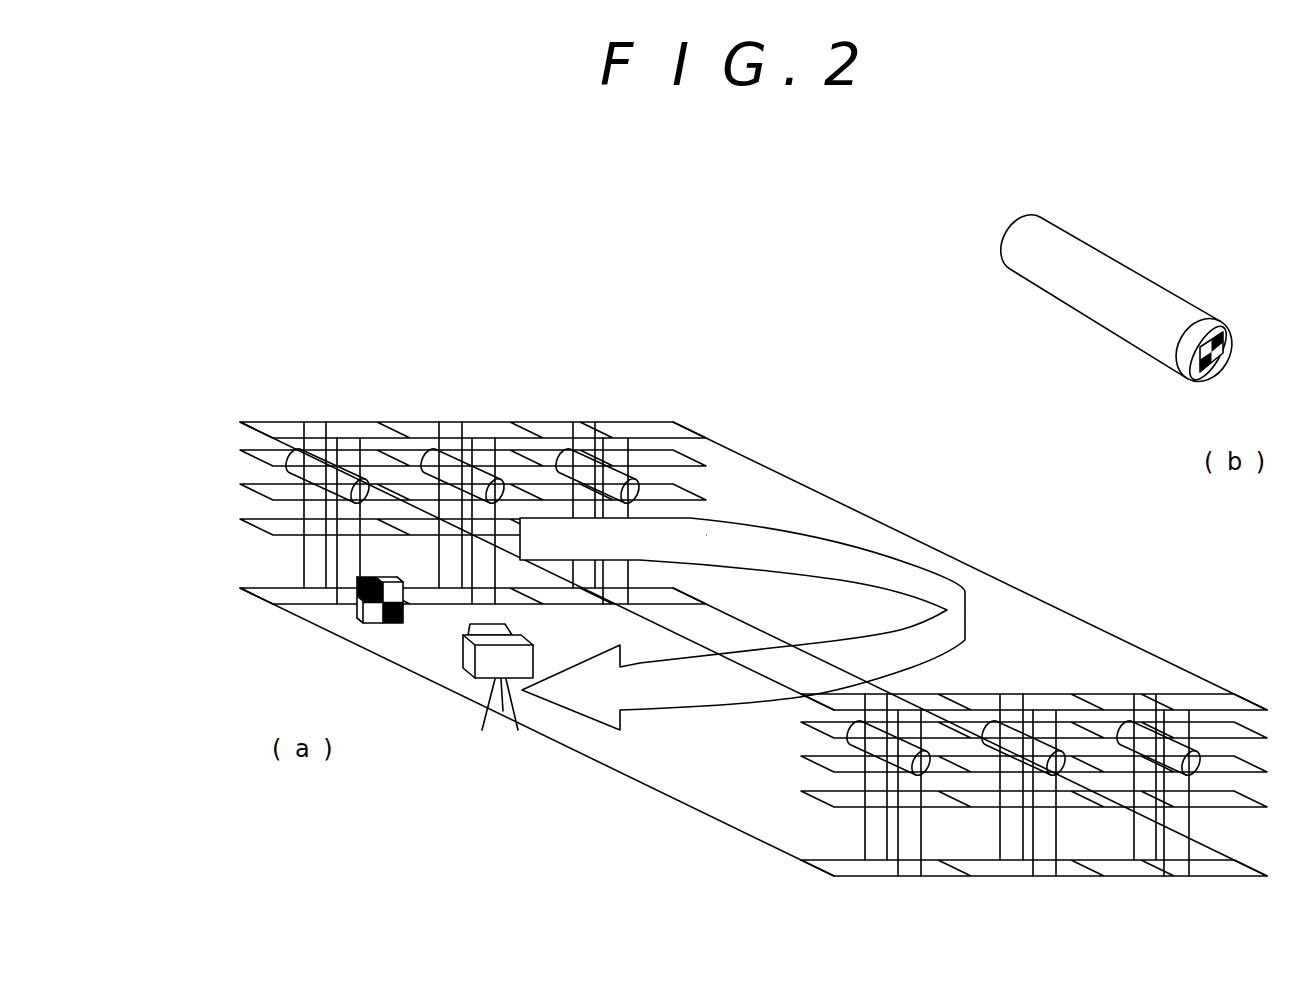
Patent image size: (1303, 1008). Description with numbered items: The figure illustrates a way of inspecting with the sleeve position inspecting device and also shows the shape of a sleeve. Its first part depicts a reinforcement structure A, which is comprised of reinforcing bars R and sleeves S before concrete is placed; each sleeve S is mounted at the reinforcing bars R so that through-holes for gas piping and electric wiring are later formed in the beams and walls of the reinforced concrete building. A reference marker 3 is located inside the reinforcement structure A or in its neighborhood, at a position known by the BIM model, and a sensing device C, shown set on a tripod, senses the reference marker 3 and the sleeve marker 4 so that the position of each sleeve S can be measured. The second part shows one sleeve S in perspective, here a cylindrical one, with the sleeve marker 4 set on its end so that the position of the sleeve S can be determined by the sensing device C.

The reinforcement structure A is at (304, 409).
The sleeve S is at (455, 473).
The reinforcing bars R is at (484, 424).
The reference marker 3 is at (358, 620).
The sensing device C is at (475, 681).
The sleeve marker 4 is at (1225, 348).